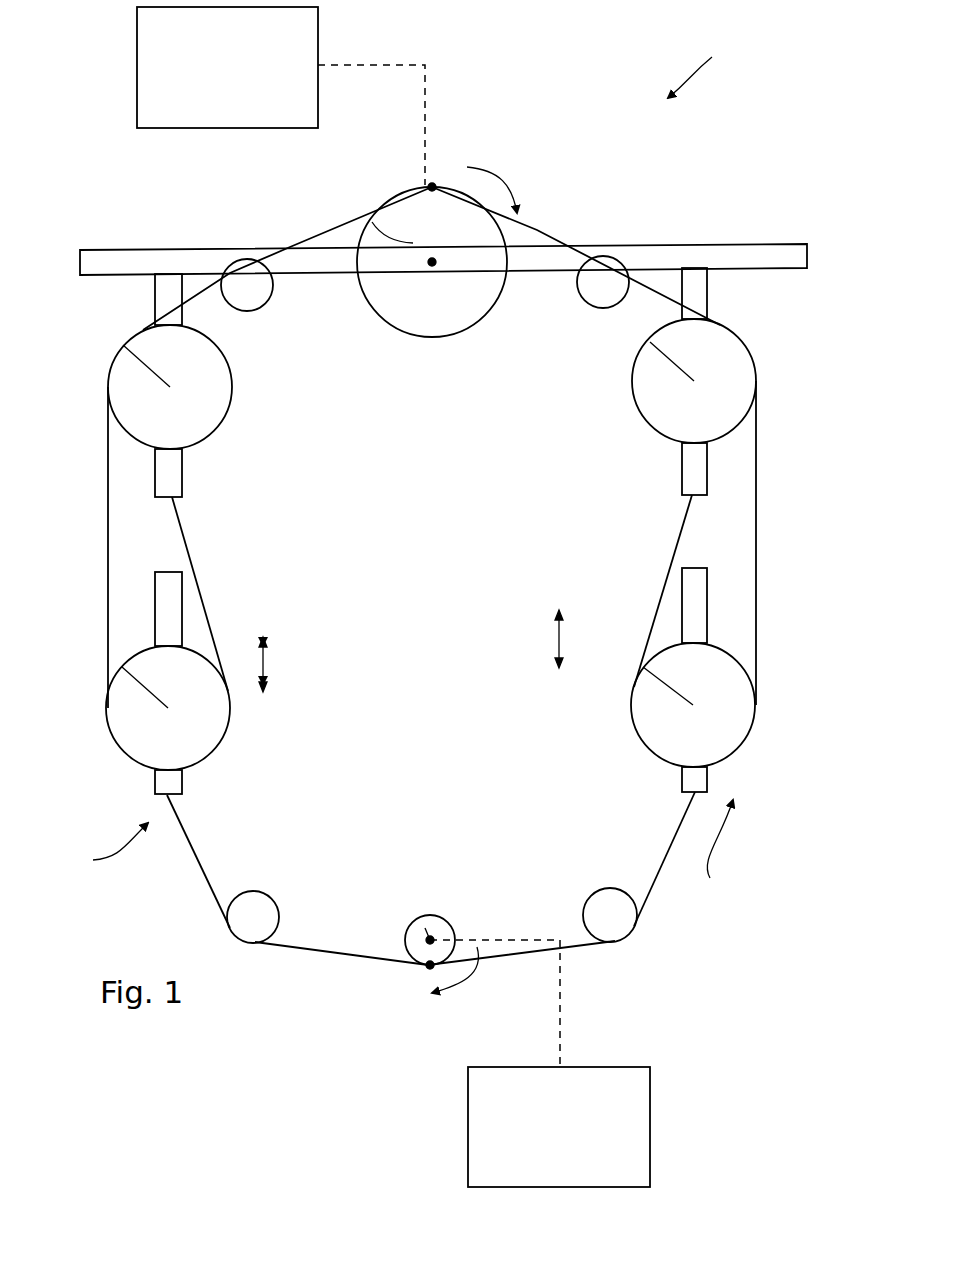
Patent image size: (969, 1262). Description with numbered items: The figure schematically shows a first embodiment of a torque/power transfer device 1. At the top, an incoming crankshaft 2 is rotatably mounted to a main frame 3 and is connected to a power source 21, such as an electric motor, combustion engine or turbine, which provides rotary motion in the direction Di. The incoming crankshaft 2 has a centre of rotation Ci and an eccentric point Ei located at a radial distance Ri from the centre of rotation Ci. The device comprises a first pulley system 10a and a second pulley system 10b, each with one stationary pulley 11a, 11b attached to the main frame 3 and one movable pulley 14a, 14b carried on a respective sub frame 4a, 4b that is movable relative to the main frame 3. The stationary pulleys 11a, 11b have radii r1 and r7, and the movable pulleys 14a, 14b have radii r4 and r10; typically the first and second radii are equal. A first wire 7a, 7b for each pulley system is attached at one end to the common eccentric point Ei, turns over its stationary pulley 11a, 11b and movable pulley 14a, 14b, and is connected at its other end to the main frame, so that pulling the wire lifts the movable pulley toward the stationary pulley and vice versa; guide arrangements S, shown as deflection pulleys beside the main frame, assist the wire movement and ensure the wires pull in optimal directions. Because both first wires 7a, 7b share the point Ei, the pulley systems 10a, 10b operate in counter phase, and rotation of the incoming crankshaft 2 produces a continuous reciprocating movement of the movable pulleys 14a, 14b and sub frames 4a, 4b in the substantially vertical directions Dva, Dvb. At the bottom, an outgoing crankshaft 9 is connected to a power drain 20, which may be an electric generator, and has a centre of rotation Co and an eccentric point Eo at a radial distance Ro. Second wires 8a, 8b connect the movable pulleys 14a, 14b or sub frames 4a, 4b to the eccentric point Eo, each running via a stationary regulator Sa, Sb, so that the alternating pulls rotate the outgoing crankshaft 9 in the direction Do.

The torque/power transfer device 1 is at (696, 64).
The incoming crankshaft 2 is at (491, 312).
The main frame 3 is at (107, 278).
The sub frame 4a is at (155, 603).
The sub frame 4b is at (682, 590).
The first wire 7a is at (287, 240).
The first wire 7b is at (537, 228).
The second wire 8a is at (210, 880).
The second wire 8b is at (663, 857).
The outgoing crankshaft 9 is at (422, 928).
The first pulley system 10a is at (105, 852).
The second pulley system 10b is at (715, 854).
The stationary pulley 11a is at (117, 428).
The stationary pulley 11b is at (650, 432).
The movable pulley 14a is at (130, 760).
The movable pulley 14b is at (647, 752).
The power drain 20 is at (573, 1140).
The power source 21 is at (242, 81).
The guide arrangement S is at (258, 287).
The first stationary regulator Sa is at (247, 925).
The first stationary regulator Sb is at (620, 925).
The centre of rotation Ci is at (432, 262).
The radial distance Ri is at (432, 262).
The eccentric point Ei is at (433, 183).
The rotation direction of incoming crankshaft Di is at (495, 184).
The centre of rotation Co is at (410, 940).
The radial distance Ro is at (425, 928).
The eccentric point Eo is at (430, 969).
The rotation direction of outgoing crankshaft Do is at (469, 970).
The first radii r1 is at (138, 362).
The first radii r4 is at (147, 703).
The second radii r7 is at (670, 363).
The second radii r10 is at (665, 692).
The vertical direction Dva is at (292, 664).
The vertical direction Dvb is at (536, 639).